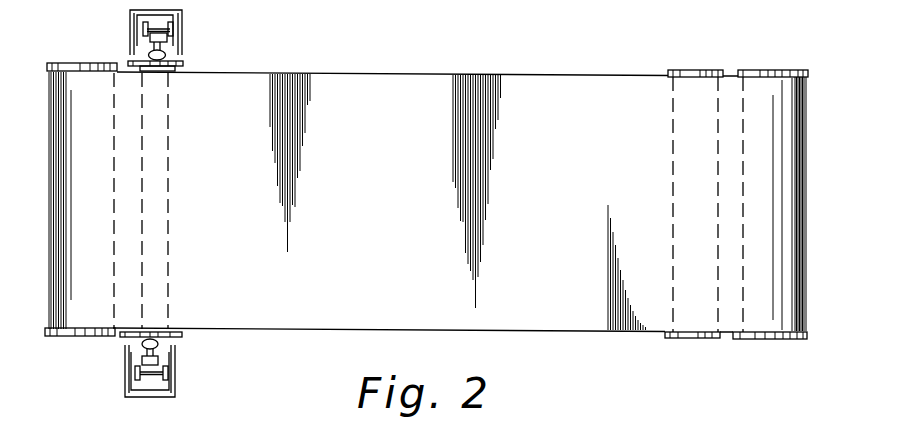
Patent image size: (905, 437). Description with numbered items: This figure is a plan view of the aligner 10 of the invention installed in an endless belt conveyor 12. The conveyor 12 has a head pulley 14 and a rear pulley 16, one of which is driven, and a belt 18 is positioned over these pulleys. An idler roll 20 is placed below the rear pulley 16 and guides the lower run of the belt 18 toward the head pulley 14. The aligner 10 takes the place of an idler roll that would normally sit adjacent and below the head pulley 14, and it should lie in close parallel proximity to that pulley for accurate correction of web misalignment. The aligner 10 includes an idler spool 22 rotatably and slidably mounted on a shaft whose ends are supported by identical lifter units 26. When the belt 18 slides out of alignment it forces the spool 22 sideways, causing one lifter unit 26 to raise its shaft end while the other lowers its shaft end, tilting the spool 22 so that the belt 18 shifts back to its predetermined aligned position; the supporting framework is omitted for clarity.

The aligner 10 is at (125, 373).
The endless belt conveyor 12 is at (430, 66).
The head pulley 14 is at (90, 64).
The rear pulley 16 is at (792, 71).
The belt 18 is at (521, 92).
The idler roll 20 is at (702, 71).
The idler spool 22 is at (165, 170).
The lifter unit 26 is at (182, 32).